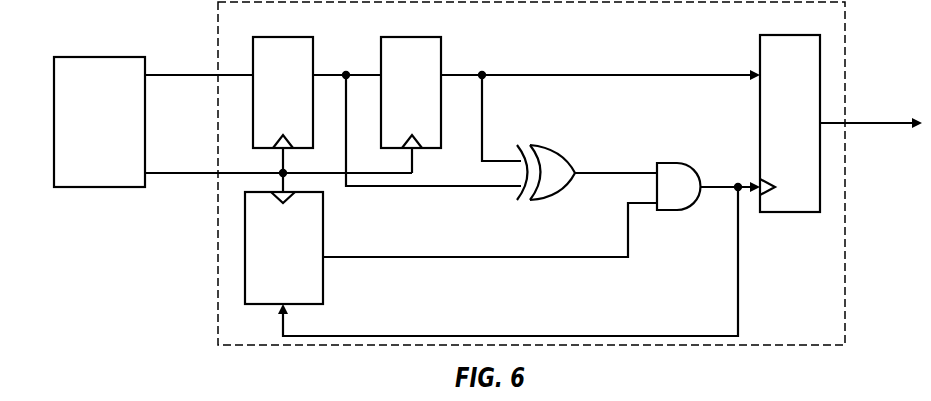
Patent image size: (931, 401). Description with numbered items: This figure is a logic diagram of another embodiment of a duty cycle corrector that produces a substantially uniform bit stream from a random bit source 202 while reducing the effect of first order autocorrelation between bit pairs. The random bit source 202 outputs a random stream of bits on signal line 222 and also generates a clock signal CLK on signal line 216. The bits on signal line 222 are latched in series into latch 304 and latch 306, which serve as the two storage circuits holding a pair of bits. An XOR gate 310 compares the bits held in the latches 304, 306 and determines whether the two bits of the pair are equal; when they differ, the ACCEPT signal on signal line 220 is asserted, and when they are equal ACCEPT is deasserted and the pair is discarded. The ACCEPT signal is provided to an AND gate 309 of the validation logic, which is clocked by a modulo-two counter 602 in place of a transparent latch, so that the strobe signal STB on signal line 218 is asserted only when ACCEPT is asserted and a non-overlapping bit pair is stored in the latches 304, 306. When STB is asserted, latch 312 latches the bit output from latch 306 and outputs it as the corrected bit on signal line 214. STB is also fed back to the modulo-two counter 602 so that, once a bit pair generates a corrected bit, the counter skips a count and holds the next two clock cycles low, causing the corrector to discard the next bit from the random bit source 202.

The random bit source 202 is at (106, 108).
The signal line 222 is at (199, 59).
The signal line 216 is at (278, 166).
The latch 304 is at (300, 78).
The latch 306 is at (429, 78).
The XOR gate 310 is at (563, 160).
The signal line 220 is at (612, 179).
The AND gate 309 is at (696, 174).
The signal line 218 is at (519, 249).
The modulo-2 counter 602 is at (451, 248).
The latch 312 is at (799, 111).
The signal line 214 is at (871, 109).